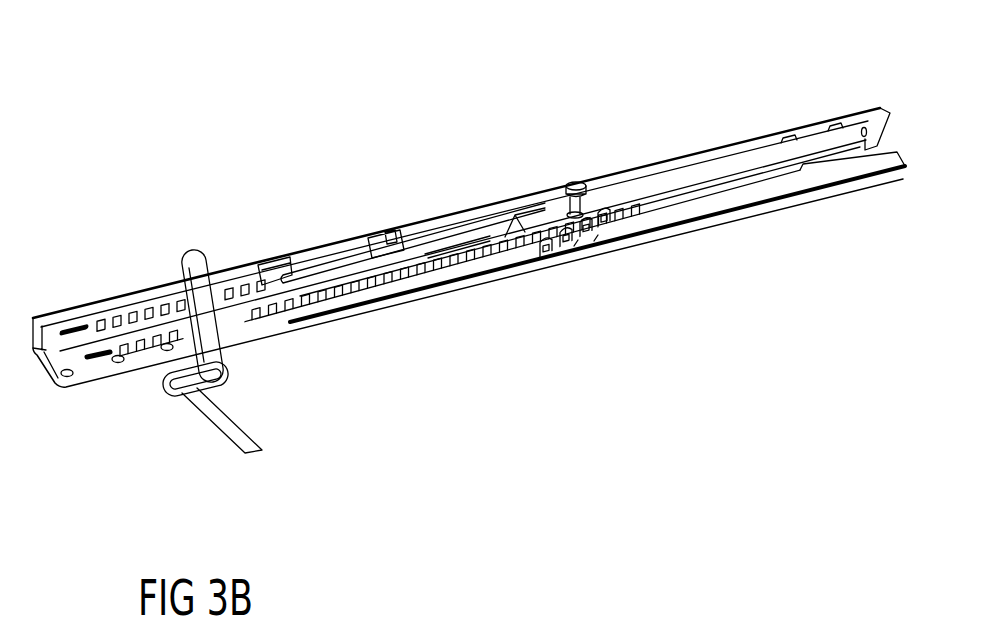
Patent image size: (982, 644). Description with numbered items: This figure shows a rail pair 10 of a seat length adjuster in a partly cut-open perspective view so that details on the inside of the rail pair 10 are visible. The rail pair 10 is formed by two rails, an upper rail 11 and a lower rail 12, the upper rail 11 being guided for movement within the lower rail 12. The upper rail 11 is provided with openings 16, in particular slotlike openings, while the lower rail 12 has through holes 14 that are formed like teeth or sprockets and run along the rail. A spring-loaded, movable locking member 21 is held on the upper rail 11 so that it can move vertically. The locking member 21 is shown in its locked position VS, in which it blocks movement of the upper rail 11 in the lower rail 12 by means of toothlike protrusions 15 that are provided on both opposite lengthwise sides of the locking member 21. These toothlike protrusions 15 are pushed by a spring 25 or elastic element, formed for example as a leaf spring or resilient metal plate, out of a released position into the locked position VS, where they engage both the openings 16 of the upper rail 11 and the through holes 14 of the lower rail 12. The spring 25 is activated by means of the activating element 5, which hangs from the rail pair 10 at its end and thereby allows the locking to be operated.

The rail pair 10 is at (292, 181).
The upper rail 11 is at (812, 128).
The lower rail 12 is at (748, 192).
The through holes 14 is at (470, 284).
The toothlike protrusions 15 is at (638, 236).
The openings 16 is at (600, 252).
The locking member 21 is at (546, 218).
The spring 25 is at (456, 214).
The activating element 5 is at (180, 266).
The locked position VS is at (596, 140).